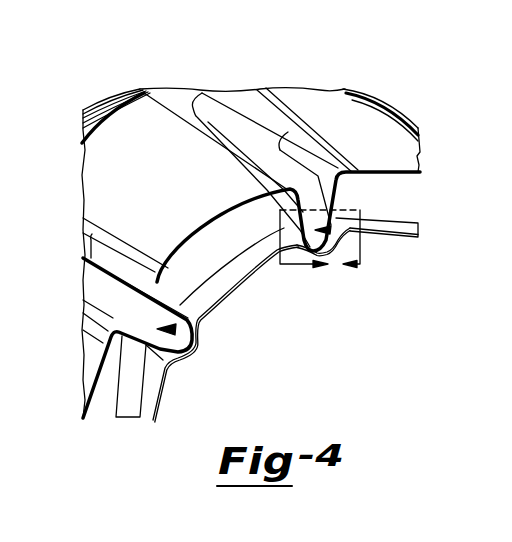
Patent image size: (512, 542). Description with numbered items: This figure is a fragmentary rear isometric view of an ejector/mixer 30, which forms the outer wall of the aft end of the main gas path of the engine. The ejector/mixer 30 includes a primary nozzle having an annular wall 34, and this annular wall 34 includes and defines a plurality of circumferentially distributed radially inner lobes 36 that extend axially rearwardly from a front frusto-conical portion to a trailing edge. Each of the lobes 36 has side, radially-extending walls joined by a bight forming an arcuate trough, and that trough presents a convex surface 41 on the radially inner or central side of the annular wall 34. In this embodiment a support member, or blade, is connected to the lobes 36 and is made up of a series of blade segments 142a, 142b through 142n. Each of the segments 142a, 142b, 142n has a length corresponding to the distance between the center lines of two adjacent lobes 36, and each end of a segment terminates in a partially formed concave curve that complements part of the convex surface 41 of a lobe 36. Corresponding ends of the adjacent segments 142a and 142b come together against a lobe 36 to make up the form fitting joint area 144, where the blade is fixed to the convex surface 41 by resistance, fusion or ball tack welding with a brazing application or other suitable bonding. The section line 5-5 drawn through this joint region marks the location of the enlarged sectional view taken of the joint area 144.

The ejector/mixer 30 is at (398, 93).
The annular wall 34 is at (162, 193).
The convex surface 41 is at (280, 206).
The lobes 36 is at (350, 237).
The blade segment 142a is at (222, 294).
The blade segment 142b is at (405, 238).
The blade segment 142n is at (128, 408).
The joint area 144 is at (313, 258).
The section line 5-5 is at (336, 269).